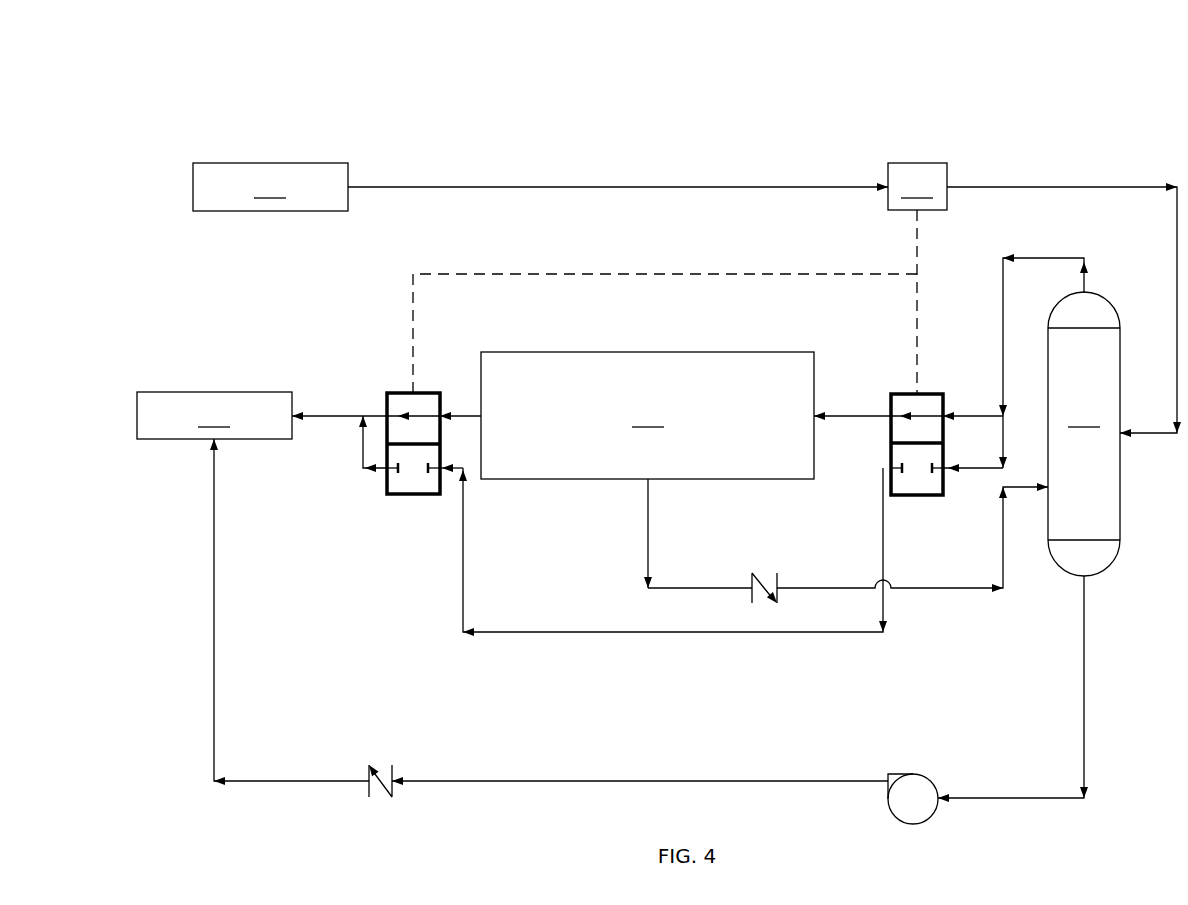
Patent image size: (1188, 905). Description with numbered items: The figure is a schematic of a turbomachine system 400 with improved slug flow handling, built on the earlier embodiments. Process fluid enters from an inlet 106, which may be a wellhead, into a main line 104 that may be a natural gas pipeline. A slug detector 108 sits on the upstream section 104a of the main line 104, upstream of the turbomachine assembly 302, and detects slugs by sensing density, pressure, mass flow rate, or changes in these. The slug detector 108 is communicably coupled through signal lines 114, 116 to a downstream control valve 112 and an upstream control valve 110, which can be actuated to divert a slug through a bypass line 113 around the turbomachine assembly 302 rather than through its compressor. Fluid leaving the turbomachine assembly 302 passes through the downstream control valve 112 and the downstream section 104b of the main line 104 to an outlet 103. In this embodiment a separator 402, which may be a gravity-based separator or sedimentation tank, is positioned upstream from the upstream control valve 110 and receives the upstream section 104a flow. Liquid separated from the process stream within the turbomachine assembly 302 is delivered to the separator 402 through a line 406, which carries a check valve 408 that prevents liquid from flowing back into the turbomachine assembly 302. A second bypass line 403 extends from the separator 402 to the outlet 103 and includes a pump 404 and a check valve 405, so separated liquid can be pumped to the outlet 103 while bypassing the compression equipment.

The turbomachine system 400 is at (206, 58).
The inlet 106 is at (270, 187).
The main line 104 is at (577, 187).
The slug detector 108 is at (917, 186).
The upstream section 104a is at (1176, 252).
The signal line 114 is at (660, 274).
The signal line 116 is at (917, 318).
The downstream section 104b is at (308, 414).
The outlet 103 is at (214, 415).
The turbomachine assembly 302 is at (647, 470).
The downstream control valve 112 is at (418, 496).
The upstream control valve 110 is at (918, 496).
The separator 402 is at (1029, 528).
The check valve 408 is at (781, 581).
The line 406 is at (944, 593).
The bypass line 113 is at (722, 634).
The check valve 405 is at (395, 775).
The second bypass line 403 is at (778, 783).
The pump 404 is at (940, 786).